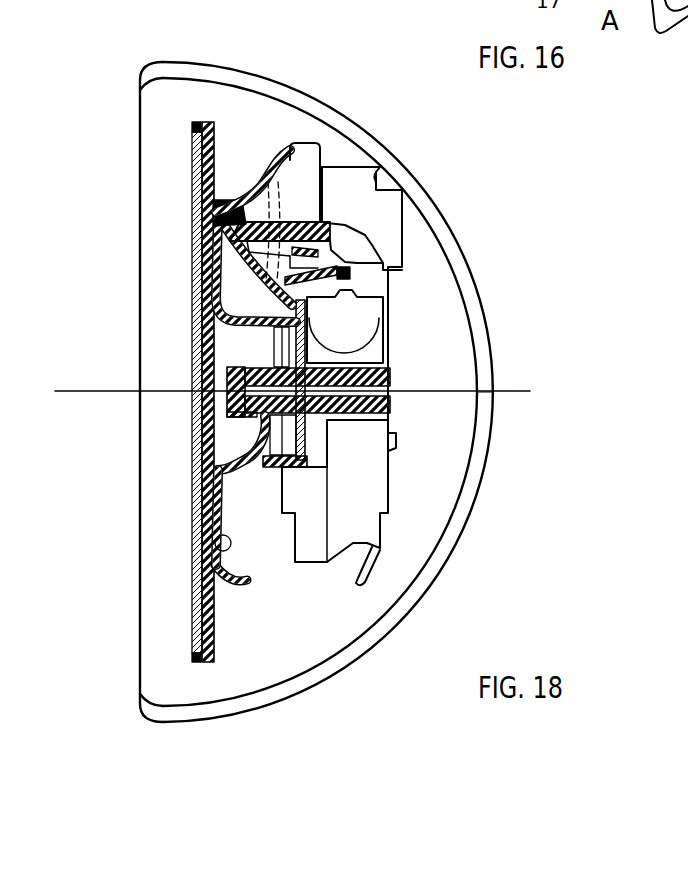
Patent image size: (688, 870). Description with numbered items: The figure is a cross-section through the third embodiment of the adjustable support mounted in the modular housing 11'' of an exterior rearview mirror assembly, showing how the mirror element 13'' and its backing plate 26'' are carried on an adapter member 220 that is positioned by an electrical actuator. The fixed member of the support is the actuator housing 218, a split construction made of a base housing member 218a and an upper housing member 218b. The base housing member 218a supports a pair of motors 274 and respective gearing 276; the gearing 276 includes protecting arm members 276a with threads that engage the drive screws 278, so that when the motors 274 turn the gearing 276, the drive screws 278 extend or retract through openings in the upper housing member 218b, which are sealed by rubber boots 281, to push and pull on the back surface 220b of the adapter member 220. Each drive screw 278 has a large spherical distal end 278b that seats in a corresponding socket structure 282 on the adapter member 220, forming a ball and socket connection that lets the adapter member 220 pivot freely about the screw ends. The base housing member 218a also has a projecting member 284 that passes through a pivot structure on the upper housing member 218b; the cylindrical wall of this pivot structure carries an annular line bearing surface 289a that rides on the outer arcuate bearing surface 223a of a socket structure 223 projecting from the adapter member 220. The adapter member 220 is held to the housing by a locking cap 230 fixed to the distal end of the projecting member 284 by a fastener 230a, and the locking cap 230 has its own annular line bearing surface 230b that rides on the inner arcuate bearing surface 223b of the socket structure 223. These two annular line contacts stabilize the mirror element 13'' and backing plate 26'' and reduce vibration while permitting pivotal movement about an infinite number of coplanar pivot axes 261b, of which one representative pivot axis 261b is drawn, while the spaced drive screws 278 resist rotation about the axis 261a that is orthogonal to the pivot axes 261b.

The modular housing 11'' is at (316, 412).
The reflective element 13'' is at (153, 392).
The backing plate 26'' is at (172, 337).
The actuator housing 218 is at (337, 154).
The base housing member 218a is at (375, 176).
The upper housing member 218b is at (303, 142).
The adapter member 220 is at (241, 192).
The back surface 220b is at (215, 547).
The socket structure 223 is at (227, 314).
The arcuate bearing surface 223a is at (217, 490).
The inner arcuate bearing surface 223b is at (250, 464).
The locking cap 230 is at (233, 340).
The fastener 230a is at (230, 373).
The annular line bearing surface 230b is at (258, 462).
The axis 261a is at (505, 388).
The pivot axis 261b is at (284, 466).
The motor 274 is at (367, 330).
The gearing 276 is at (346, 279).
The protecting arm member 276a is at (366, 238).
The drive screw 278 is at (307, 223).
The spherical distal end 278b is at (226, 228).
The rubber boot 281 is at (270, 210).
The socket structure 282 is at (234, 185).
The projecting member 284 is at (302, 437).
The annular line bearing surface 289a is at (262, 462).